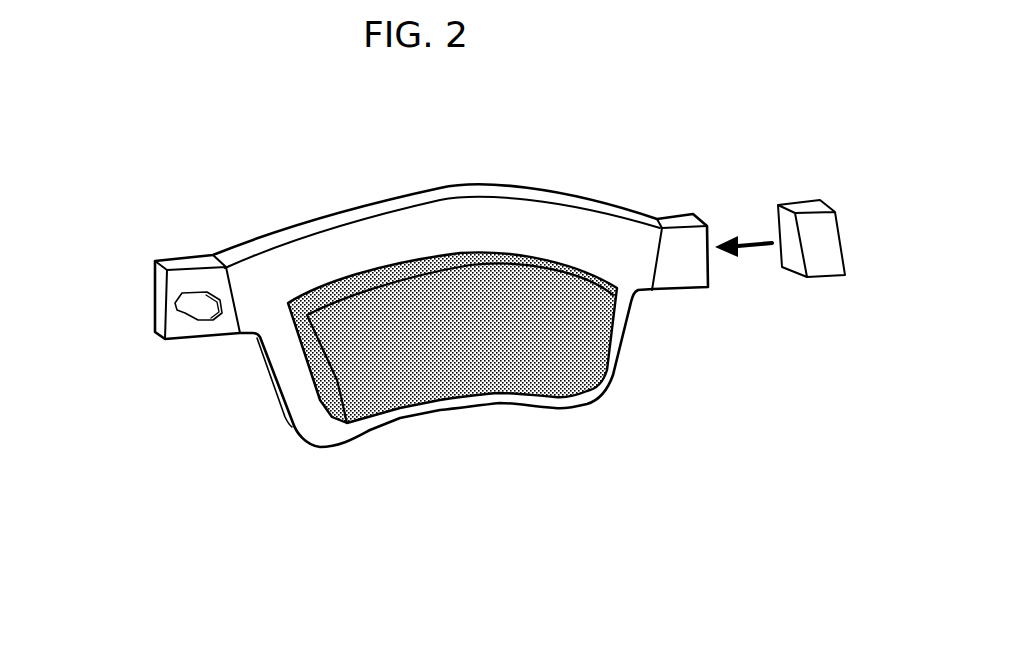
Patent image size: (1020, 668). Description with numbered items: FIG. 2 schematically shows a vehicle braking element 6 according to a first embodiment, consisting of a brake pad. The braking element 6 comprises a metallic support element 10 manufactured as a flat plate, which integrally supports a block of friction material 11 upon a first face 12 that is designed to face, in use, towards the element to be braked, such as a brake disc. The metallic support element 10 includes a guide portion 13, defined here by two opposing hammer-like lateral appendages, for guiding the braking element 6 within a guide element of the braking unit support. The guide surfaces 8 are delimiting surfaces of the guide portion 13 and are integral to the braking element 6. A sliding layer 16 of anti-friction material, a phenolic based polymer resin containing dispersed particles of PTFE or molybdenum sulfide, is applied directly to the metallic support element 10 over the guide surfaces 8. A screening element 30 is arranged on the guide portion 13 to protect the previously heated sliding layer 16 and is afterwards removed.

The braking element 6 is at (645, 464).
The guide surface 8 is at (190, 312).
The metallic support element 10 is at (337, 243).
The block of friction material 11 is at (477, 392).
The first face 12 is at (622, 246).
The guide portion 13 is at (157, 249).
The sliding layer 16 is at (203, 322).
The screening element 30 is at (814, 180).